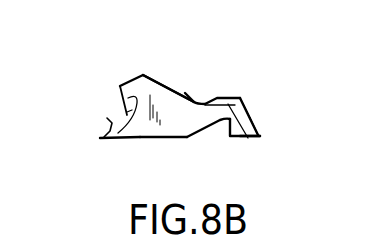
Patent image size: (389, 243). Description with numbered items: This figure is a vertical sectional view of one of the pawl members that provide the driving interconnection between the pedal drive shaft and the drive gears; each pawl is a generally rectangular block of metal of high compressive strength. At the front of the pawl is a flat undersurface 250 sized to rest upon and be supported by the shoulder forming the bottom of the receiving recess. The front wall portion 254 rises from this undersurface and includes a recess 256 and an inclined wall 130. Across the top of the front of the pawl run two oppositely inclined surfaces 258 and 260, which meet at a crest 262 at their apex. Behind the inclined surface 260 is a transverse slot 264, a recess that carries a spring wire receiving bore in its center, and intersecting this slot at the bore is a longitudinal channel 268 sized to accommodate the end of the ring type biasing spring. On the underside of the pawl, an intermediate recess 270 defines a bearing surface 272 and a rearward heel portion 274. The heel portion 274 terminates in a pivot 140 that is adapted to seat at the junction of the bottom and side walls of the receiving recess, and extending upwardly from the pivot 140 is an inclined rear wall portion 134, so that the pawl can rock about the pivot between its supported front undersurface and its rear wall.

The inclined wall 130 is at (112, 136).
The inclined rear wall portion 134 is at (258, 98).
The pivot 140 is at (258, 135).
The flat undersurface 250 is at (138, 138).
The front wall portion 254 is at (102, 128).
The recess 256 is at (118, 120).
The inclined surface 258 is at (134, 80).
The inclined surface 260 is at (185, 92).
The crest 262 is at (143, 76).
The transverse slot 264 is at (200, 97).
The longitudinal channel 268 is at (260, 113).
The intermediate recess 270 is at (226, 133).
The bearing surface 272 is at (191, 138).
The rearward heel portion 274 is at (258, 138).